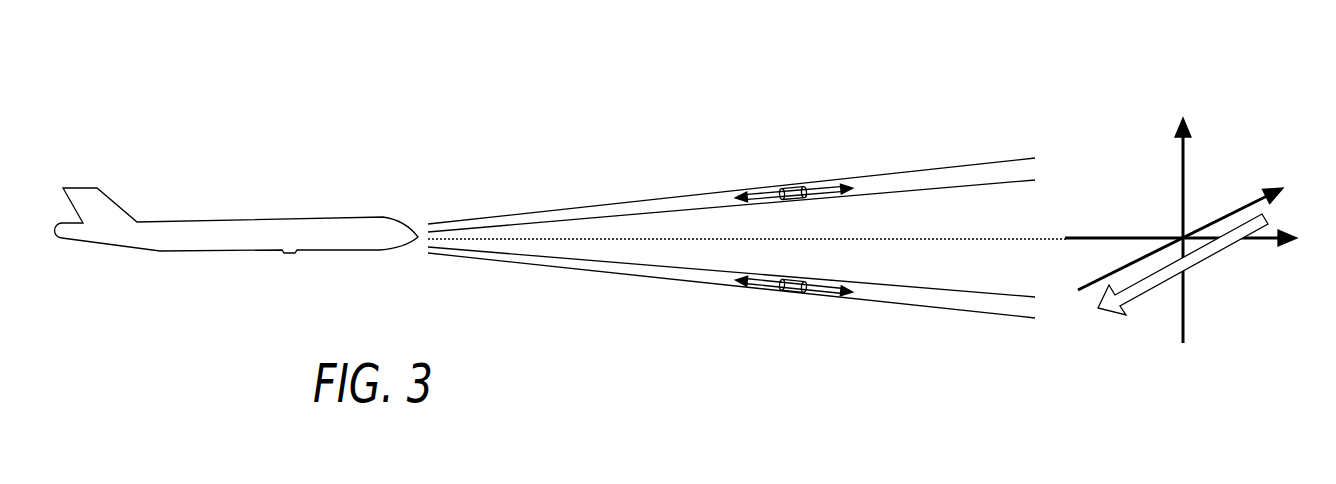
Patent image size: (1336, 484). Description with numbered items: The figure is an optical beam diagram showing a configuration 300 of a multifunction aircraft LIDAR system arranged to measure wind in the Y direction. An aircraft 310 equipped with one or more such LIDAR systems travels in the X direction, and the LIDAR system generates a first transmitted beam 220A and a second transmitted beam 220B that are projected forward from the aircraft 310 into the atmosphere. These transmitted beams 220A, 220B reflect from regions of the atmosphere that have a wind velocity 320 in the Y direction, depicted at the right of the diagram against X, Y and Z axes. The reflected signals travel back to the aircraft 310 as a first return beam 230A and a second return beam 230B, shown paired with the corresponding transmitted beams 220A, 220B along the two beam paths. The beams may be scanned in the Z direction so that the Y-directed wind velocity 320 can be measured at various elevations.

The configuration 300 is at (328, 51).
The aircraft 310 is at (255, 220).
The first transmitted beam 220A is at (820, 183).
The second transmitted beam 220B is at (820, 292).
The first return beam 230A is at (763, 193).
The second return beam 230B is at (763, 286).
The wind velocity 320 is at (1207, 257).